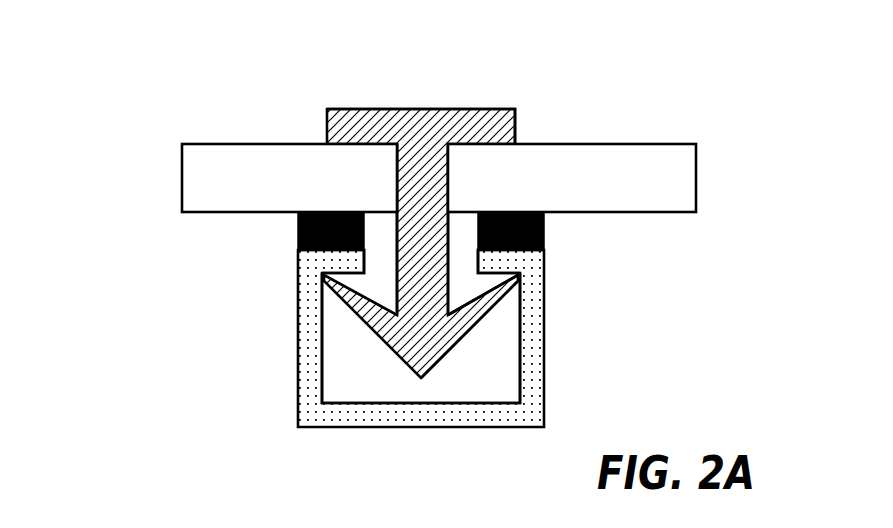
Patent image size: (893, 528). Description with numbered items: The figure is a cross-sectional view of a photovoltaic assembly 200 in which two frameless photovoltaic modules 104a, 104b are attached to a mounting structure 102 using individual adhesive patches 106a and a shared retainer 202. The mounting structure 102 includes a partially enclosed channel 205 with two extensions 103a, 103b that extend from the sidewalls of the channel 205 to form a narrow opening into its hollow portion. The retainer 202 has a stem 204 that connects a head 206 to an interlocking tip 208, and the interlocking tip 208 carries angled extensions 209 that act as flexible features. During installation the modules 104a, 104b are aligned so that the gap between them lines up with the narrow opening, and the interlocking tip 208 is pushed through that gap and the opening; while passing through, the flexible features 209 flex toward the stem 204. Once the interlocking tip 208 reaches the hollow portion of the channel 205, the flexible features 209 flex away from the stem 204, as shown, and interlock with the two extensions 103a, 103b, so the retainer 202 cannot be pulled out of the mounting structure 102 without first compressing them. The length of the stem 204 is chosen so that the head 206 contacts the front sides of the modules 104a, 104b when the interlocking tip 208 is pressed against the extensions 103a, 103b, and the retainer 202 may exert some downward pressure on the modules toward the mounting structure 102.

The photovoltaic assembly 200 is at (200, 88).
The retainer 202 is at (414, 108).
The stem 204 is at (417, 280).
The head 206 is at (483, 125).
The interlocking tip 208 is at (447, 355).
The angled extensions 209 is at (477, 311).
The mounting structure 102 is at (308, 361).
The extension 103a is at (340, 258).
The extension 103b is at (495, 262).
The frameless photovoltaic module 104a is at (182, 180).
The frameless photovoltaic module 104b is at (696, 177).
The adhesive patch 106a is at (298, 233).
The channel 205 is at (350, 383).